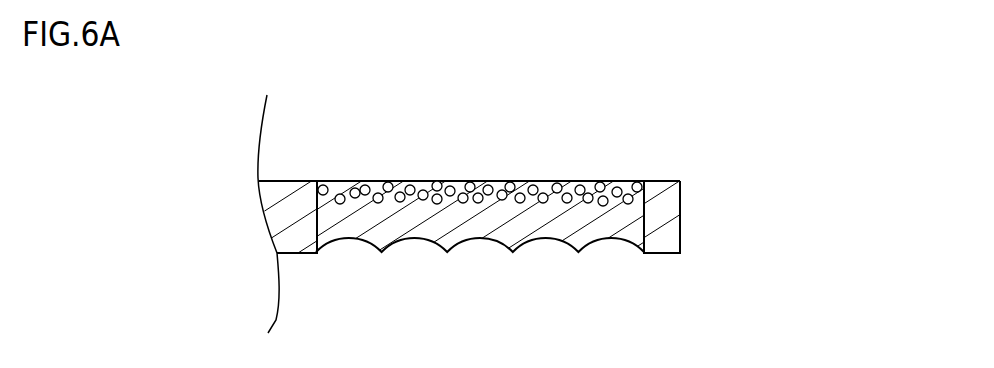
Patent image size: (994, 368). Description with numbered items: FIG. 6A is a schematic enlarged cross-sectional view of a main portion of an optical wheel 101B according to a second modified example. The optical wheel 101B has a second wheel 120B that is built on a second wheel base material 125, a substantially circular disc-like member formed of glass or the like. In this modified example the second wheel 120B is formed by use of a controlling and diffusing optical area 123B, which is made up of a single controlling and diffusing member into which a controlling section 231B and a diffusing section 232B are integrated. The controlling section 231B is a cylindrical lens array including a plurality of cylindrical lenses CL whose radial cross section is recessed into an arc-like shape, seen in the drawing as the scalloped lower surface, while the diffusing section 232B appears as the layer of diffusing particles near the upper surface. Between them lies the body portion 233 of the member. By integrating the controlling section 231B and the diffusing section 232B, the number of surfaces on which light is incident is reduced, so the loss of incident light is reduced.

The optical wheel 101B is at (741, 139).
The second wheel 120B is at (692, 279).
The second wheel base material 125 is at (665, 220).
The controlling and diffusing optical area 123B is at (480, 227).
The diffusing section 232B is at (480, 183).
The controlling section 231B is at (466, 241).
The base body 233 is at (587, 220).
The cylindrical lens CL is at (347, 273).